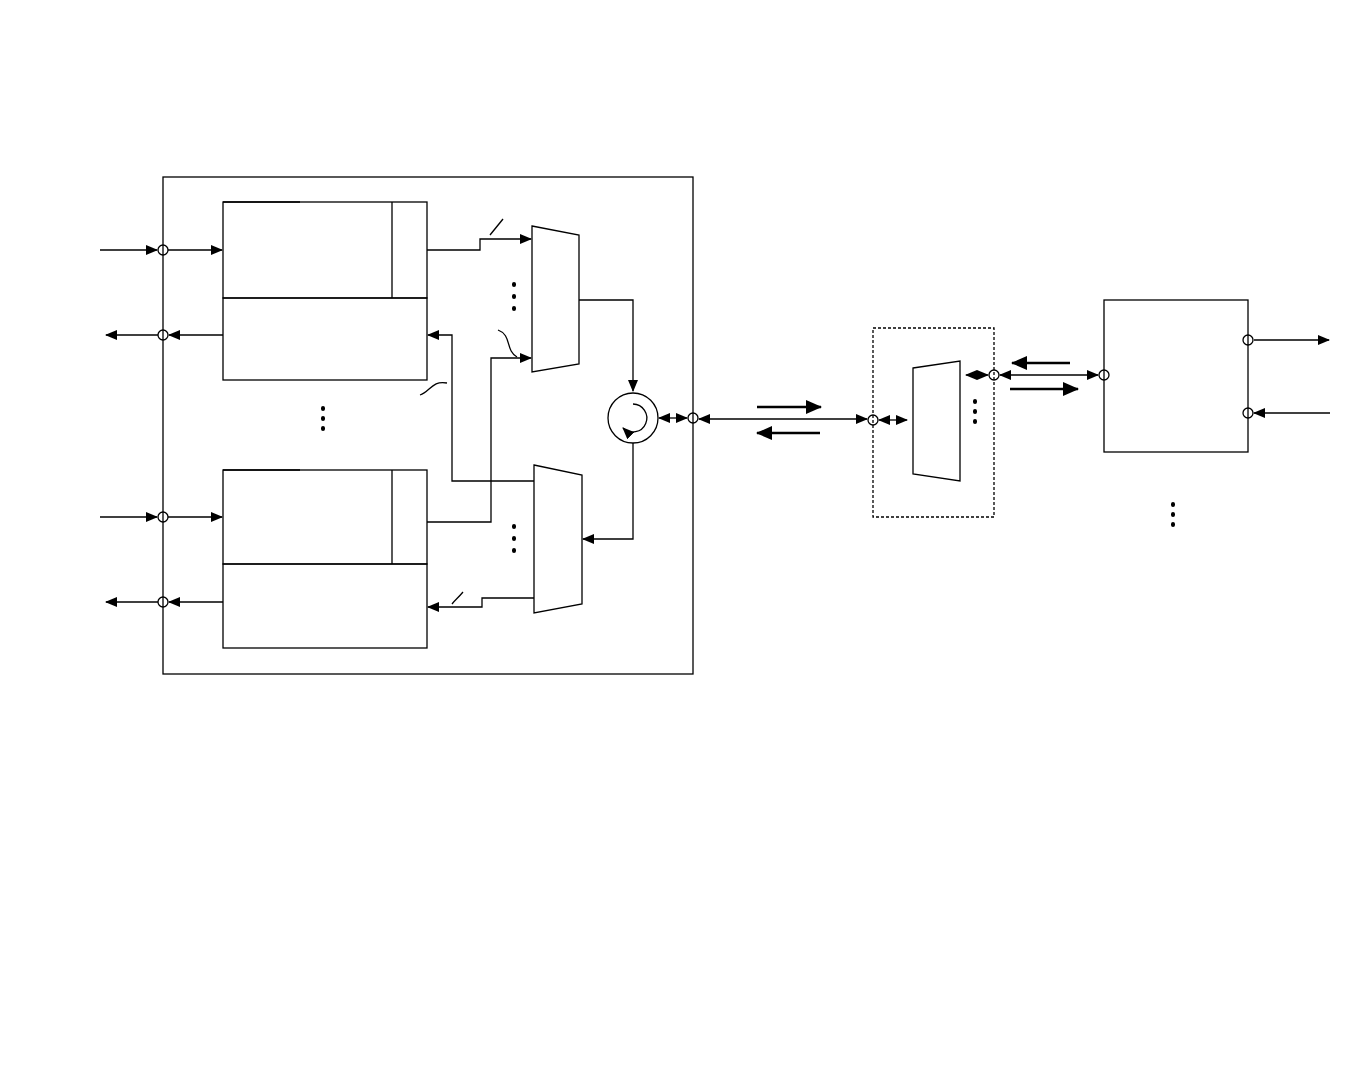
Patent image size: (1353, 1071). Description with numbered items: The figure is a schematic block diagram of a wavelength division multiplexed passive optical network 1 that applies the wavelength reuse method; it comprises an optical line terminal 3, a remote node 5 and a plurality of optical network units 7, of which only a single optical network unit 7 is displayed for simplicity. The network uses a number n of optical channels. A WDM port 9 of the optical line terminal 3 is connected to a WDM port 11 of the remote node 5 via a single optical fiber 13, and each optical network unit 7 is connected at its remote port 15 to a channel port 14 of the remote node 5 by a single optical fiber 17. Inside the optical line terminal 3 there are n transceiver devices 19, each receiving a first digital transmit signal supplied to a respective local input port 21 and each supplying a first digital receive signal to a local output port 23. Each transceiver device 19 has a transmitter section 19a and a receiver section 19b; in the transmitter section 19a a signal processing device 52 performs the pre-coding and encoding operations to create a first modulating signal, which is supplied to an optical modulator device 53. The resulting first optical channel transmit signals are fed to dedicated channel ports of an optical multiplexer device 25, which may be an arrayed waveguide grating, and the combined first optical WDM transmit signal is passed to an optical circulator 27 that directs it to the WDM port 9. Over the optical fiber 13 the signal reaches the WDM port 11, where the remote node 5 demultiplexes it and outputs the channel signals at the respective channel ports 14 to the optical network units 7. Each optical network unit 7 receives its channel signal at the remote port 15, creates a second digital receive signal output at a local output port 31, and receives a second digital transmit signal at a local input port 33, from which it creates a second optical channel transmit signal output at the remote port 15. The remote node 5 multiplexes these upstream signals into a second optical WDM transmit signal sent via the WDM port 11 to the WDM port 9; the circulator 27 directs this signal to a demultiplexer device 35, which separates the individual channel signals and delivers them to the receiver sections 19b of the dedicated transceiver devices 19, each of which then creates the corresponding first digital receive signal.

The WDM-PON 1 is at (876, 198).
The OLT 3 is at (628, 187).
The remote node 5 is at (936, 338).
The ONU 7 is at (1188, 300).
The WDM port 9 is at (697, 412).
The WDM port 11 is at (870, 413).
The optical fiber 13 is at (722, 424).
The channel port 14 is at (995, 370).
The remote port 15 is at (1108, 380).
The optical fiber 17 is at (1068, 376).
The transceiver device 19 is at (301, 428).
The transmitter section 19a is at (278, 212).
The receiver section 19b is at (280, 372).
The local input port 21 is at (160, 245).
The local output port 23 is at (160, 340).
The optical multiplexer device 25 is at (571, 245).
The optical circulator 27 is at (636, 405).
The local output port 31 is at (1252, 345).
The local input port 33 is at (1252, 418).
The demultiplexer device 35 is at (572, 594).
The signal processing device 52 is at (243, 222).
The optical modulator device 53 is at (413, 213).